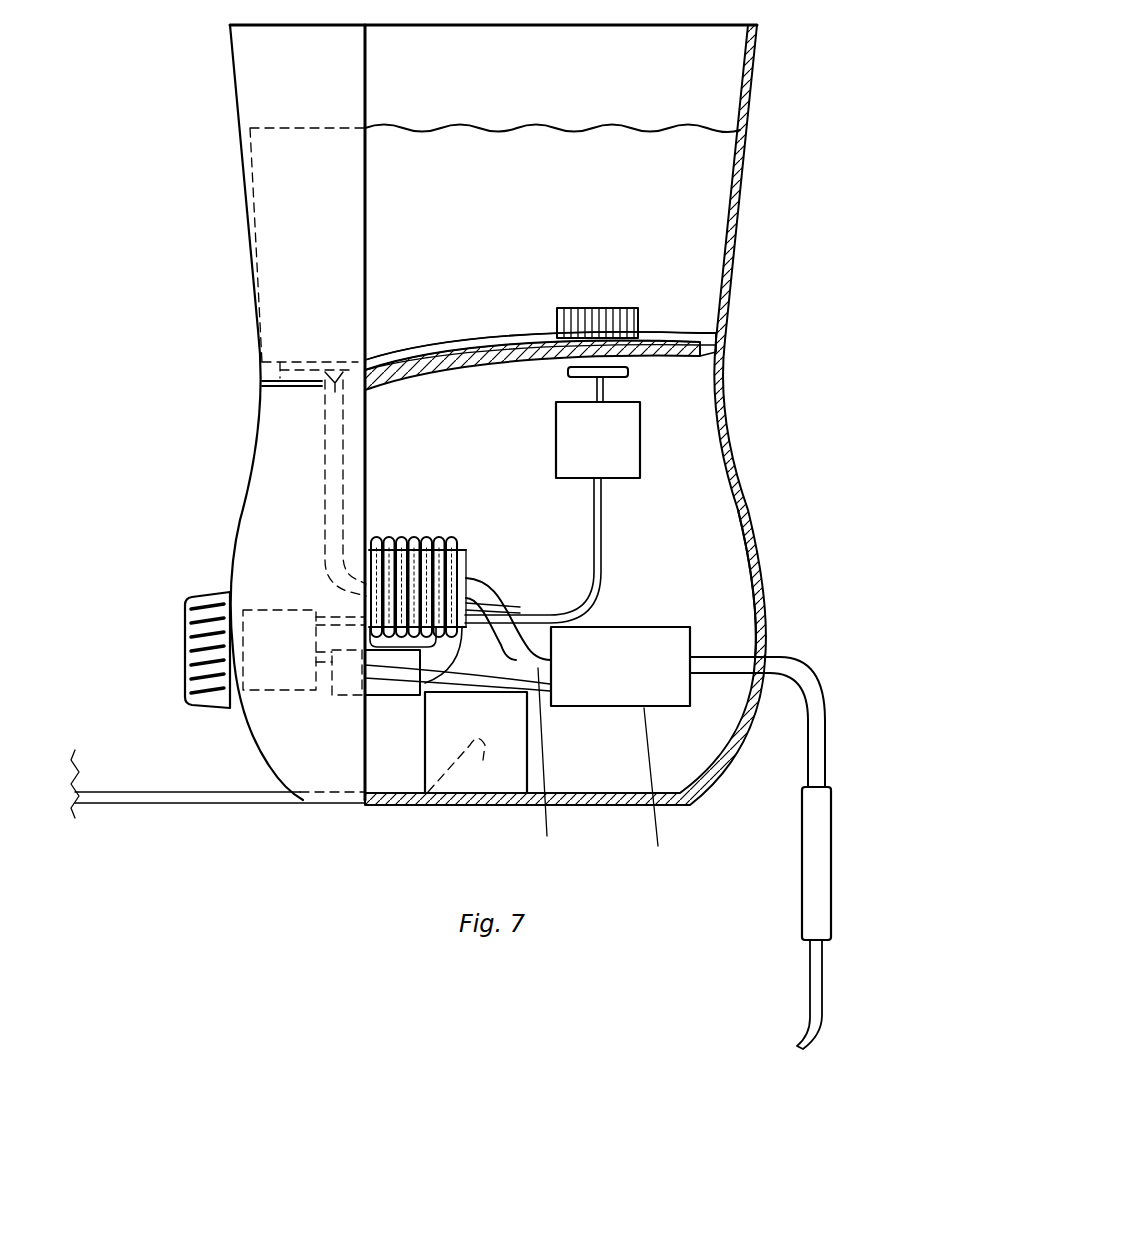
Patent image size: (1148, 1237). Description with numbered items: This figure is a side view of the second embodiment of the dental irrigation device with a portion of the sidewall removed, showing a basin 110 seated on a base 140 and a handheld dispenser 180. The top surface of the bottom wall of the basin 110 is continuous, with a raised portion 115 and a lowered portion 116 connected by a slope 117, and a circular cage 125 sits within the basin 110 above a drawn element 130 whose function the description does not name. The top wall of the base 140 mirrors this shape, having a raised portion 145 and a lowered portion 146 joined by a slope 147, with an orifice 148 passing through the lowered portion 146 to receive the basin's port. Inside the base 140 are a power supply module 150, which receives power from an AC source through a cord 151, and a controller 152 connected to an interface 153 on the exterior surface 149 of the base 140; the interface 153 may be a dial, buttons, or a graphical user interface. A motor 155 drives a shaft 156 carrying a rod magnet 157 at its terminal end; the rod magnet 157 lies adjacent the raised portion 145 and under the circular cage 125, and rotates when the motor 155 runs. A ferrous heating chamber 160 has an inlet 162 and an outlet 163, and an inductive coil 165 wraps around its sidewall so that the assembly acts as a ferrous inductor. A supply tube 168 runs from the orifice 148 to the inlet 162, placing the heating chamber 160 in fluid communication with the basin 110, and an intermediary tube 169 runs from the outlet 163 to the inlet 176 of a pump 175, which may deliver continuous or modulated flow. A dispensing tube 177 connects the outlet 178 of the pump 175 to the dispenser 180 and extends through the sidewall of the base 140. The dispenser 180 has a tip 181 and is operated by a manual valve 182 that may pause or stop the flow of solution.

The basin 110 is at (748, 103).
The raised portion 115 is at (718, 325).
The lowered portion 116 is at (350, 372).
The slope 117 is at (515, 330).
The circular cage 125 is at (735, 205).
The vent grille 130 is at (633, 308).
The base 140 is at (745, 483).
The raised portion 145 is at (698, 355).
The lowered portion 146 is at (320, 392).
The slope 147 is at (432, 357).
The orifice 148 is at (322, 377).
The exterior surface 149 is at (307, 333).
The power supply module 150 is at (462, 795).
The cord 151 is at (98, 806).
The controller 152 is at (250, 692).
The interface 153 is at (183, 650).
The motor 155 is at (640, 445).
The shaft 156 is at (600, 385).
The rod magnet 157 is at (627, 373).
The heating chamber 160 is at (465, 548).
The inlet 162 is at (365, 600).
The outlet 163 is at (470, 578).
The inductive coil 165 is at (340, 692).
The supply tube 168 is at (323, 455).
The intermediary tube 169 is at (510, 607).
The pump 175 is at (660, 791).
The inlet 176 is at (541, 765).
The dispensing tube 177 is at (830, 742).
The outlet 178 is at (690, 655).
The dispenser 180 is at (832, 863).
The tip 181 is at (822, 1025).
The manual valve 182 is at (818, 908).